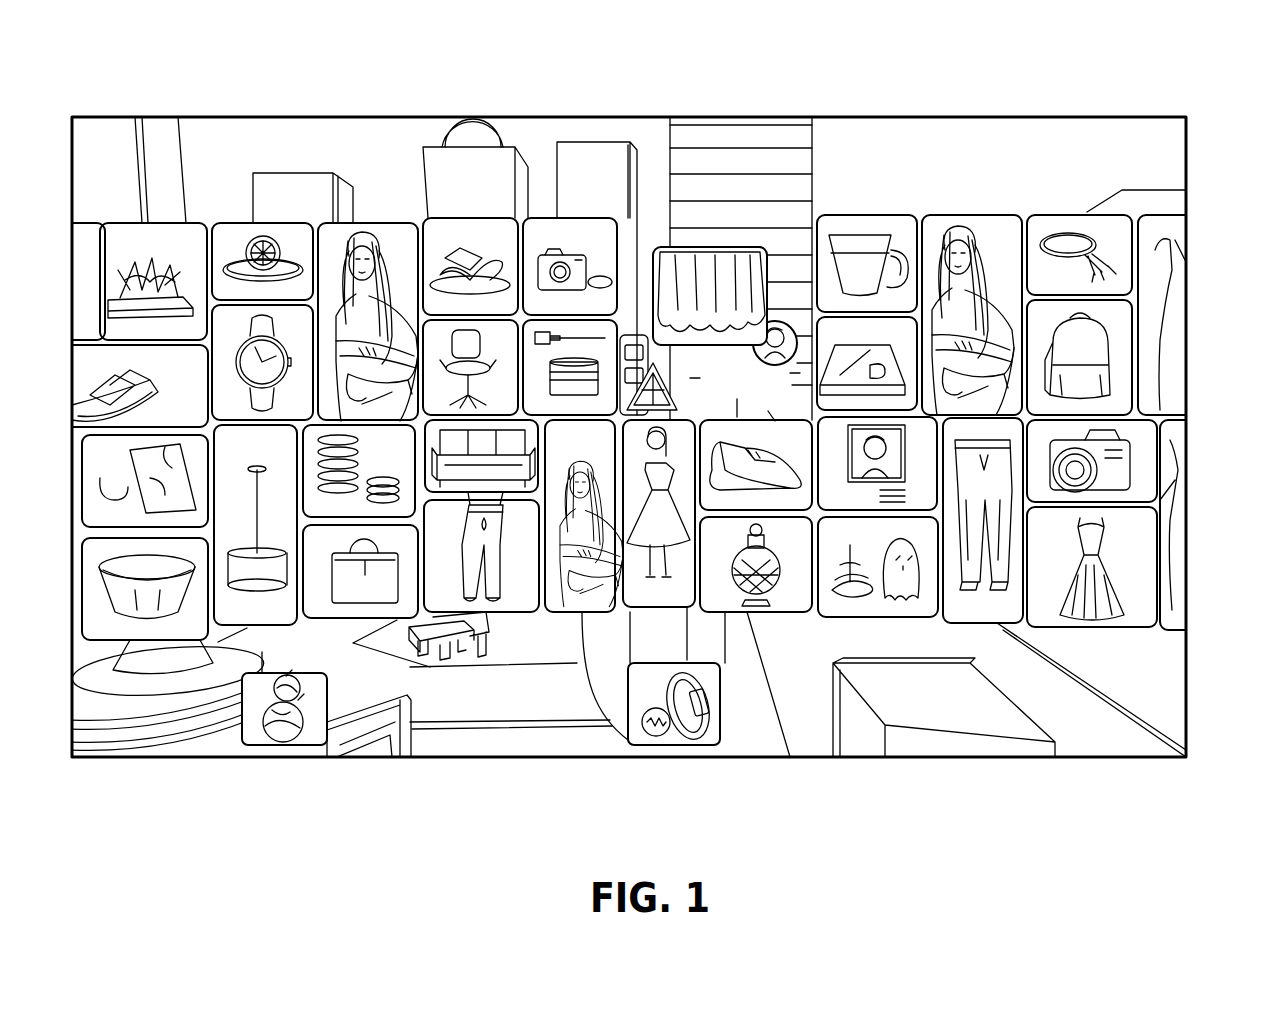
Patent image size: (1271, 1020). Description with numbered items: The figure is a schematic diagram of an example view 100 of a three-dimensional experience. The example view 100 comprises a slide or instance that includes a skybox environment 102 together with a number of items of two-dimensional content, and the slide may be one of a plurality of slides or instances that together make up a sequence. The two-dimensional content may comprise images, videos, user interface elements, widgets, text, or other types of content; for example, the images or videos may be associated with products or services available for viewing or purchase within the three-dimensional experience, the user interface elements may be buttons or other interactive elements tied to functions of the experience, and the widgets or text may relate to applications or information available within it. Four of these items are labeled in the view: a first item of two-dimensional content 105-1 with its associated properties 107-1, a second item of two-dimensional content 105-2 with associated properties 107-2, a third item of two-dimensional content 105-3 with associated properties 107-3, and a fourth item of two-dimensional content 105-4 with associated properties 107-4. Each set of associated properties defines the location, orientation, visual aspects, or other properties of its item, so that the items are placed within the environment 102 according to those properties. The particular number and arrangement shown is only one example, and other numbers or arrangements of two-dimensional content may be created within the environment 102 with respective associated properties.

The example view 100 is at (1153, 67).
The skybox environment 102 is at (838, 163).
The item of two-dimensional content 105-1 is at (238, 174).
The associated properties 107-1 is at (238, 220).
The item of two-dimensional content 105-2 is at (750, 204).
The associated properties 107-2 is at (745, 247).
The item of two-dimensional content 105-3 is at (1055, 609).
The associated properties 107-3 is at (978, 608).
The item of two-dimensional content 105-4 is at (316, 745).
The associated properties 107-4 is at (305, 747).